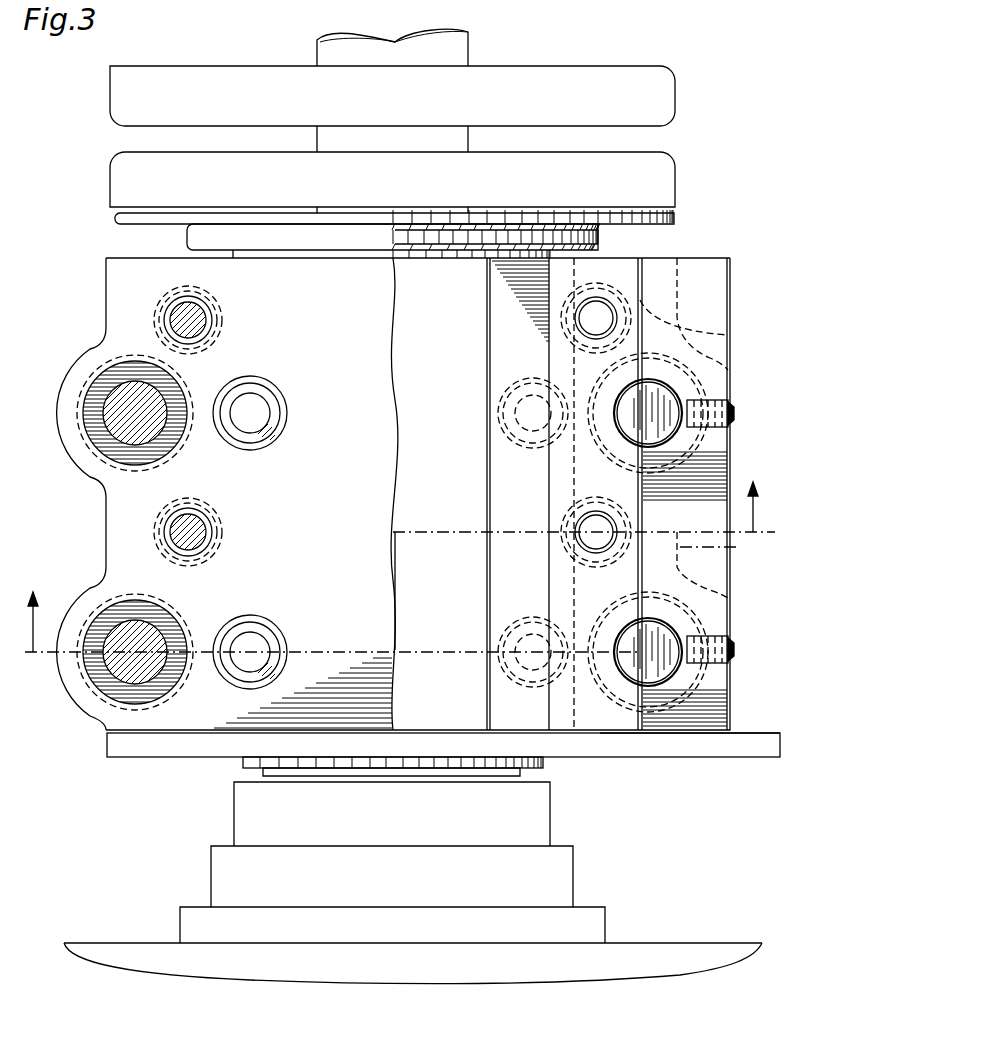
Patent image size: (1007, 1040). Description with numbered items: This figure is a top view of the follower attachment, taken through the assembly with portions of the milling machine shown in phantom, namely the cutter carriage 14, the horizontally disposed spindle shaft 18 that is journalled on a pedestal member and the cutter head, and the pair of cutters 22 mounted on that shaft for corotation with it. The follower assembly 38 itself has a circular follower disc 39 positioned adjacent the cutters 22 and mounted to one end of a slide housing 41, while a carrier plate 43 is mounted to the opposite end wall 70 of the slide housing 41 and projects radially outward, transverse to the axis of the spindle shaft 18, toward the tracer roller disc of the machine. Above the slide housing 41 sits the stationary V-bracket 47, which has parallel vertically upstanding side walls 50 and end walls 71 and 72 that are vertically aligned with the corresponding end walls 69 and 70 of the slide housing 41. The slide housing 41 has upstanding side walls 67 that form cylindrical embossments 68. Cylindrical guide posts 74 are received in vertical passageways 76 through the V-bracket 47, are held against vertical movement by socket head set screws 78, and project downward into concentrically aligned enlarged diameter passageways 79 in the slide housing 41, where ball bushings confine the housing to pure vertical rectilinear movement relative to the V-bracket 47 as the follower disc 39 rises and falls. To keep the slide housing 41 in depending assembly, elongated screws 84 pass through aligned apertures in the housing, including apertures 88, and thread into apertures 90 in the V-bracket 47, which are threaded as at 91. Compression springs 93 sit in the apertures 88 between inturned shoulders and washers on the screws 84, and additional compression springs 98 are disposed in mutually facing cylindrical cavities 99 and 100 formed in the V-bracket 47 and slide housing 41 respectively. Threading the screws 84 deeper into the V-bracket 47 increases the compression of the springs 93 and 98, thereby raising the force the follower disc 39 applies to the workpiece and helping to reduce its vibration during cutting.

The cutter carriage 14 is at (590, 894).
The spindle shaft 18 is at (317, 48).
The cutters 22 is at (678, 102).
The follower assembly 38 is at (102, 293).
The follower disc 39 is at (676, 218).
The slide housing 41 is at (106, 268).
The carrier plate 43 is at (630, 757).
The V-bracket 47 is at (730, 292).
The side walls 50 is at (730, 336).
The side walls 67 is at (106, 535).
The embossments 68 is at (78, 360).
The end wall 69 is at (150, 258).
The end wall 70 is at (140, 757).
The end wall 71 is at (722, 258).
The end wall 72 is at (660, 735).
The guide posts 74 is at (160, 402).
The passageways 76 is at (626, 622).
The socket head set screws 78 is at (734, 405).
The enlarged diameter passageways 79 is at (180, 460).
The elongated screws 84 is at (206, 316).
The apertures 88 is at (214, 298).
The apertures 90 is at (598, 300).
The threaded portion 91 is at (576, 338).
The compression springs 93 is at (216, 327).
The compression springs 98 is at (266, 390).
The cavity 99 is at (500, 420).
The cavity 100 is at (288, 408).